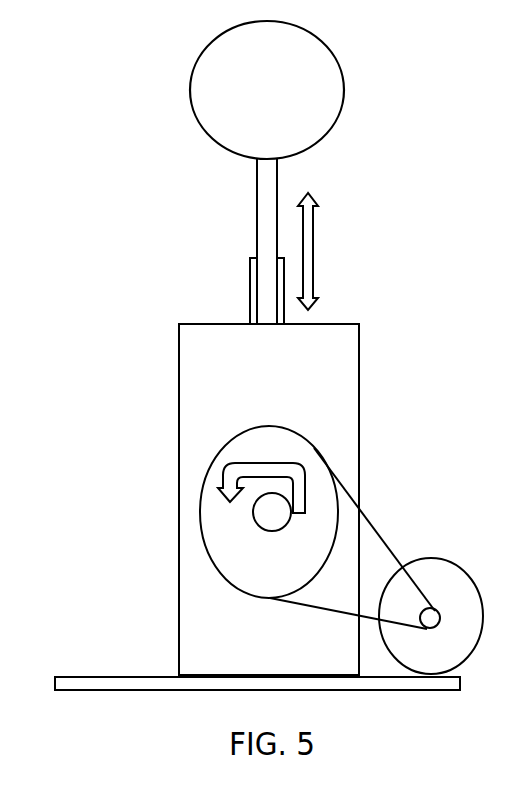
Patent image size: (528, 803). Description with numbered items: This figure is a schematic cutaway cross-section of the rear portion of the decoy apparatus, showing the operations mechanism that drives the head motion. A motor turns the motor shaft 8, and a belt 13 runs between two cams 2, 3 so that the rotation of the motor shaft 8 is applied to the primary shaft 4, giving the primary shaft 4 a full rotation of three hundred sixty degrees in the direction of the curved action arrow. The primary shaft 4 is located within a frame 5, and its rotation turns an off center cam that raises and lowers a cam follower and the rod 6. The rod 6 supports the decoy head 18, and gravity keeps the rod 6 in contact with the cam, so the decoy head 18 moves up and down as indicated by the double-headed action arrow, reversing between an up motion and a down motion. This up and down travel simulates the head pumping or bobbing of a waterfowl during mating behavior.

The decoy head 18 is at (254, 103).
The rod 6 is at (260, 255).
The cam 2 is at (258, 565).
The primary shaft 4 is at (265, 524).
The belt 13 is at (367, 515).
The motor shaft 8 is at (423, 669).
The cam 3 is at (443, 620).
The frame 5 is at (179, 624).